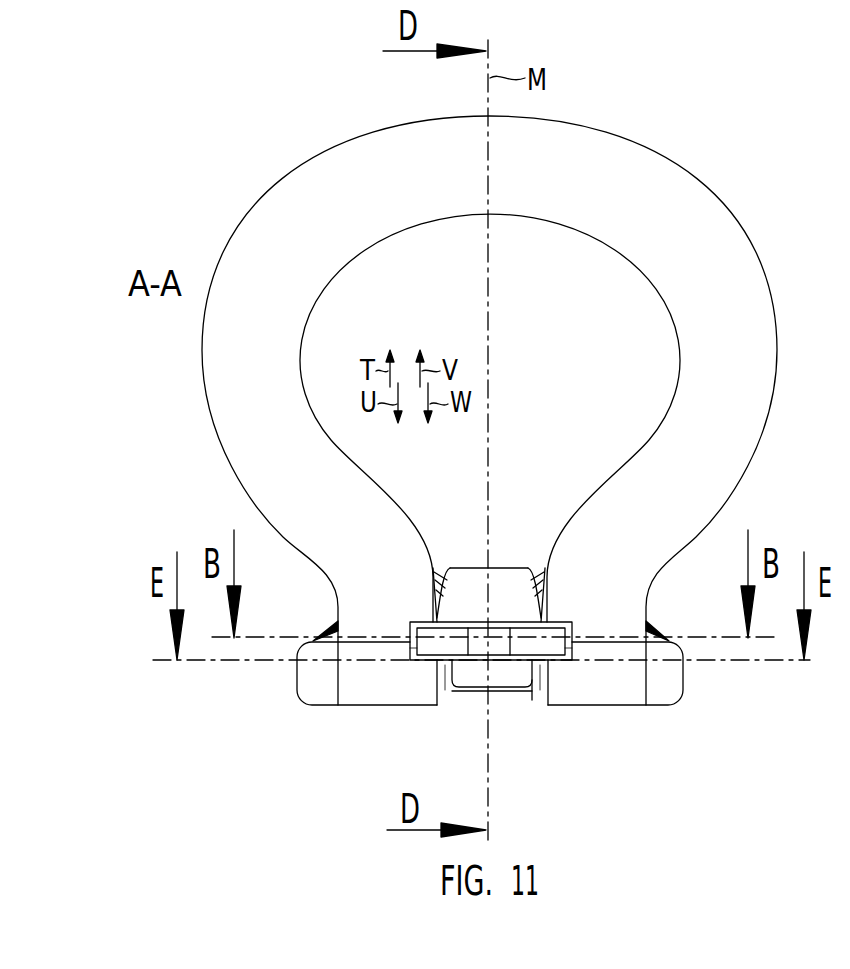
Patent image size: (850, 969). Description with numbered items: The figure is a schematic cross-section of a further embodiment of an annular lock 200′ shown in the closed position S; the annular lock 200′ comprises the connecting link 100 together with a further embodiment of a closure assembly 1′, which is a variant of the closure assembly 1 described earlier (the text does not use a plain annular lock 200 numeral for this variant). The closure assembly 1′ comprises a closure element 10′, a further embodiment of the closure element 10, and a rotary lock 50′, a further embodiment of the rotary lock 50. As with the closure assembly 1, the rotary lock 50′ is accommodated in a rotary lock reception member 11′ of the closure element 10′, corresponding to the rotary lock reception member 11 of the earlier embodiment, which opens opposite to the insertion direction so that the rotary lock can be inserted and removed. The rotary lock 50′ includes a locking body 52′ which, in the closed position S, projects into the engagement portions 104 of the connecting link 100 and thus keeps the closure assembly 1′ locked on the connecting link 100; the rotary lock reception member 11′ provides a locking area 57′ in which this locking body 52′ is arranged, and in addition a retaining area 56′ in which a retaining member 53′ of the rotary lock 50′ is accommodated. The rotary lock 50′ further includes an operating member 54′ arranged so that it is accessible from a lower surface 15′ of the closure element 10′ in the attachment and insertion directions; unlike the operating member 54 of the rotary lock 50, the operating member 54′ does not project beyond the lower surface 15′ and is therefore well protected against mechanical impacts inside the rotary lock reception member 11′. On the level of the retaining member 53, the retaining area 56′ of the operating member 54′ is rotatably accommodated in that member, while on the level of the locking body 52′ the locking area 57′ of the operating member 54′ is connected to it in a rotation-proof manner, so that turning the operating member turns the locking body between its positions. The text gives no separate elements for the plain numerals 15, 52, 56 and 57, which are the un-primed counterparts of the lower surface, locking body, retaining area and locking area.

The closure assembly 1′ is at (455, 698).
The closure assembly 1 is at (455, 698).
The closure element 10′ is at (364, 692).
The closure element 10 is at (312, 708).
The rotary lock reception member 11′ is at (486, 564).
The rotary lock reception member 11 is at (437, 566).
The lower surface 15′ is at (626, 692).
The right base part 15 is at (665, 706).
The rotary lock 50′ is at (452, 741).
The rotary lock 50 is at (463, 722).
The locking body 52′ is at (569, 644).
The bolt 52 is at (547, 627).
The retaining member 53′ is at (547, 721).
The retaining member 53 is at (535, 705).
The operating member 54′ is at (492, 711).
The operating member 54 is at (506, 694).
The retaining area 56′ is at (501, 714).
The spring element 56 is at (463, 678).
The locking area 57′ is at (491, 584).
The bolt head 57 is at (507, 626).
The connecting link 100 is at (700, 172).
The engagement portions 104 is at (410, 648).
The annular lock 200′ is at (473, 409).
The lifting eye 200 is at (473, 409).
The closed position S is at (388, 724).